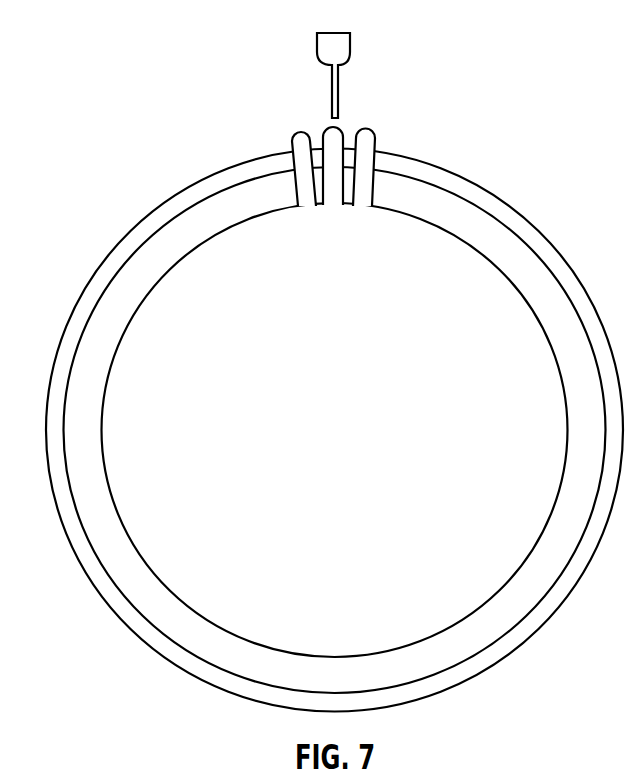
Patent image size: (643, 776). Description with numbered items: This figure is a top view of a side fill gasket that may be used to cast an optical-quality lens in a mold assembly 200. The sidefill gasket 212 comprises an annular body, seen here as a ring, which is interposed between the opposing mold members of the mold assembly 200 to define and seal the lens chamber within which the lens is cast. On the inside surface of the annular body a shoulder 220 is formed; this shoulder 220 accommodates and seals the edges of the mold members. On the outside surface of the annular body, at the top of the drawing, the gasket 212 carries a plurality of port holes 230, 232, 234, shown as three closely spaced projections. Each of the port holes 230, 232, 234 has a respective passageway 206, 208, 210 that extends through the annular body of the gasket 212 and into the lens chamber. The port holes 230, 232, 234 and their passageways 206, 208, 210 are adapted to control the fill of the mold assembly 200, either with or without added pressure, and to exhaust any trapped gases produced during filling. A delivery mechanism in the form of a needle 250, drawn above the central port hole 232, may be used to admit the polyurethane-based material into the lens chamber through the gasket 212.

The mold assembly 200 is at (117, 68).
The passageway 206 is at (297, 157).
The passageway 208 is at (332, 147).
The passageway 210 is at (368, 160).
The sidefill gasket 212 is at (550, 236).
The shoulder 220 is at (538, 557).
The port hole 230 is at (295, 134).
The port hole 232 is at (343, 128).
The port hole 234 is at (367, 128).
The needle 250 is at (343, 45).